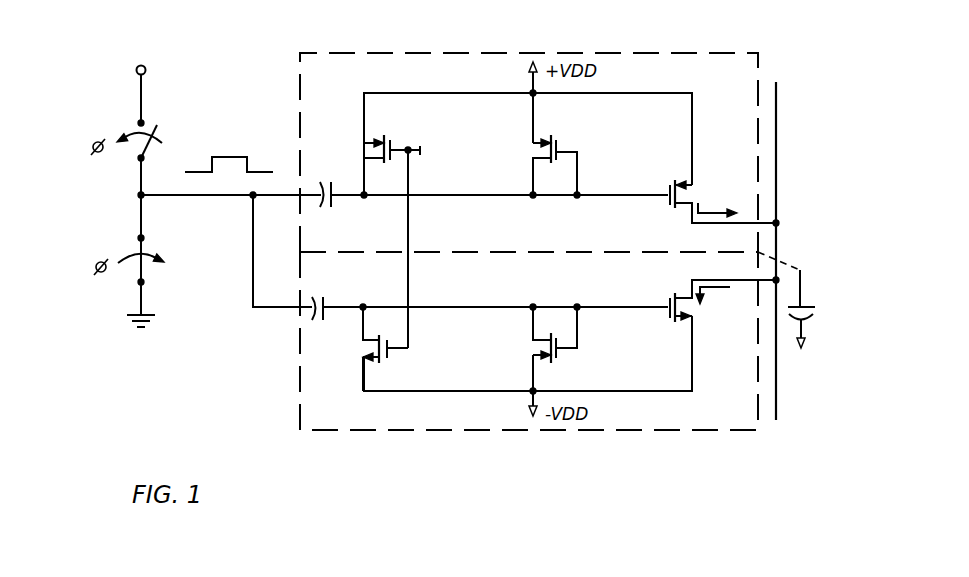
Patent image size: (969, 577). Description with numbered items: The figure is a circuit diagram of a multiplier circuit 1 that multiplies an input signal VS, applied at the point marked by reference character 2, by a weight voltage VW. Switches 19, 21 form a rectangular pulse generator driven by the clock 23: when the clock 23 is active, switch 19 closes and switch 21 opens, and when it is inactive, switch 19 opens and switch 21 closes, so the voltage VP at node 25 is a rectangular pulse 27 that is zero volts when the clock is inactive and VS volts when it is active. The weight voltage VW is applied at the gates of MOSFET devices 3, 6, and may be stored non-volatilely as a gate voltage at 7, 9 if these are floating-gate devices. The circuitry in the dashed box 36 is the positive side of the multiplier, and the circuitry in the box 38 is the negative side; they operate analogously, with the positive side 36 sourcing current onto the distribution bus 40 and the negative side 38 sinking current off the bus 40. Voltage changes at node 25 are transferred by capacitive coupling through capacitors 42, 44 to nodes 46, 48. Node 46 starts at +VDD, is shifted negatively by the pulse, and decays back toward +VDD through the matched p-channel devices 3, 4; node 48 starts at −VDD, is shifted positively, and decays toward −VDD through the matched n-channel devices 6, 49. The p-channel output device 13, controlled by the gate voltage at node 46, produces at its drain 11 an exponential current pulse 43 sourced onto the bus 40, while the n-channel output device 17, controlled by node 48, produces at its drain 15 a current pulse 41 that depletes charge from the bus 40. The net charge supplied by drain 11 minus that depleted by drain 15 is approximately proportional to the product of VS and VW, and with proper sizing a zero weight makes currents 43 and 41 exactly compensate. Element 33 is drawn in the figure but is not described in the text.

The multiplier circuit 1 is at (463, 62).
The input signal application point 2 is at (176, 28).
The p-channel MOSFET device 3 is at (390, 126).
The p-channel MOSFET device 4 is at (550, 123).
The n-channel MOSFET device 6 is at (352, 366).
The gate voltage 7 is at (398, 142).
The gate voltage 9 is at (391, 351).
The drain 11 is at (686, 207).
The p-channel MOSFET device 13 is at (672, 172).
The drain 15 is at (687, 297).
The n-channel MOSFET device 17 is at (672, 338).
The switch 19 is at (84, 144).
The switch 21 is at (85, 283).
The clock 23 is at (98, 153).
The node 25 is at (179, 197).
The rectangular pulse waveform 27 is at (226, 157).
The lower first transistor 33 is at (366, 326).
The dashed box 36 is at (300, 100).
The box 38 is at (300, 403).
The distribution bus 40 is at (777, 170).
The current pulse 41 is at (718, 288).
The capacitor 42 is at (336, 190).
The current pulse 43 is at (712, 209).
The capacitor 44 is at (325, 300).
The node 46 is at (428, 197).
The node 48 is at (437, 310).
The n-channel MOSFET device 49 is at (518, 364).